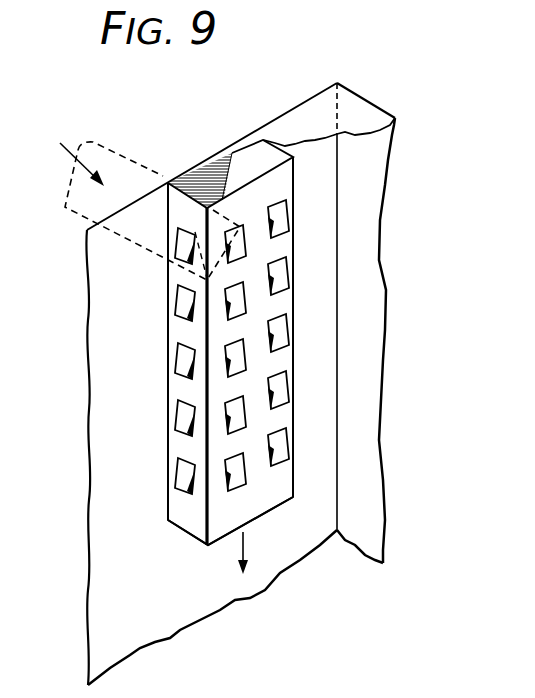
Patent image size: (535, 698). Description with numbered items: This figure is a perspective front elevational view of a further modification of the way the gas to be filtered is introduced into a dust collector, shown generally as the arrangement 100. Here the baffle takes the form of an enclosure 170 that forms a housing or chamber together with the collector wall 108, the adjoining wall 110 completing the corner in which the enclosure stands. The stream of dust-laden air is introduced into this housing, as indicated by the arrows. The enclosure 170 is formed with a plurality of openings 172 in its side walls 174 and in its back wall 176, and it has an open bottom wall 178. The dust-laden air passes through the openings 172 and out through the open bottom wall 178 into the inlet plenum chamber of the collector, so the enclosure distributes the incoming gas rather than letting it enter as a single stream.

The corner sleeve assembly 100 is at (197, 357).
The collector wall 108 is at (90, 340).
The second wall panel 110 is at (330, 105).
The enclosure 170 is at (164, 476).
The openings 172 is at (176, 361).
The side walls 174 is at (180, 331).
The back wall 176 is at (280, 357).
The open bottom wall 178 is at (224, 540).